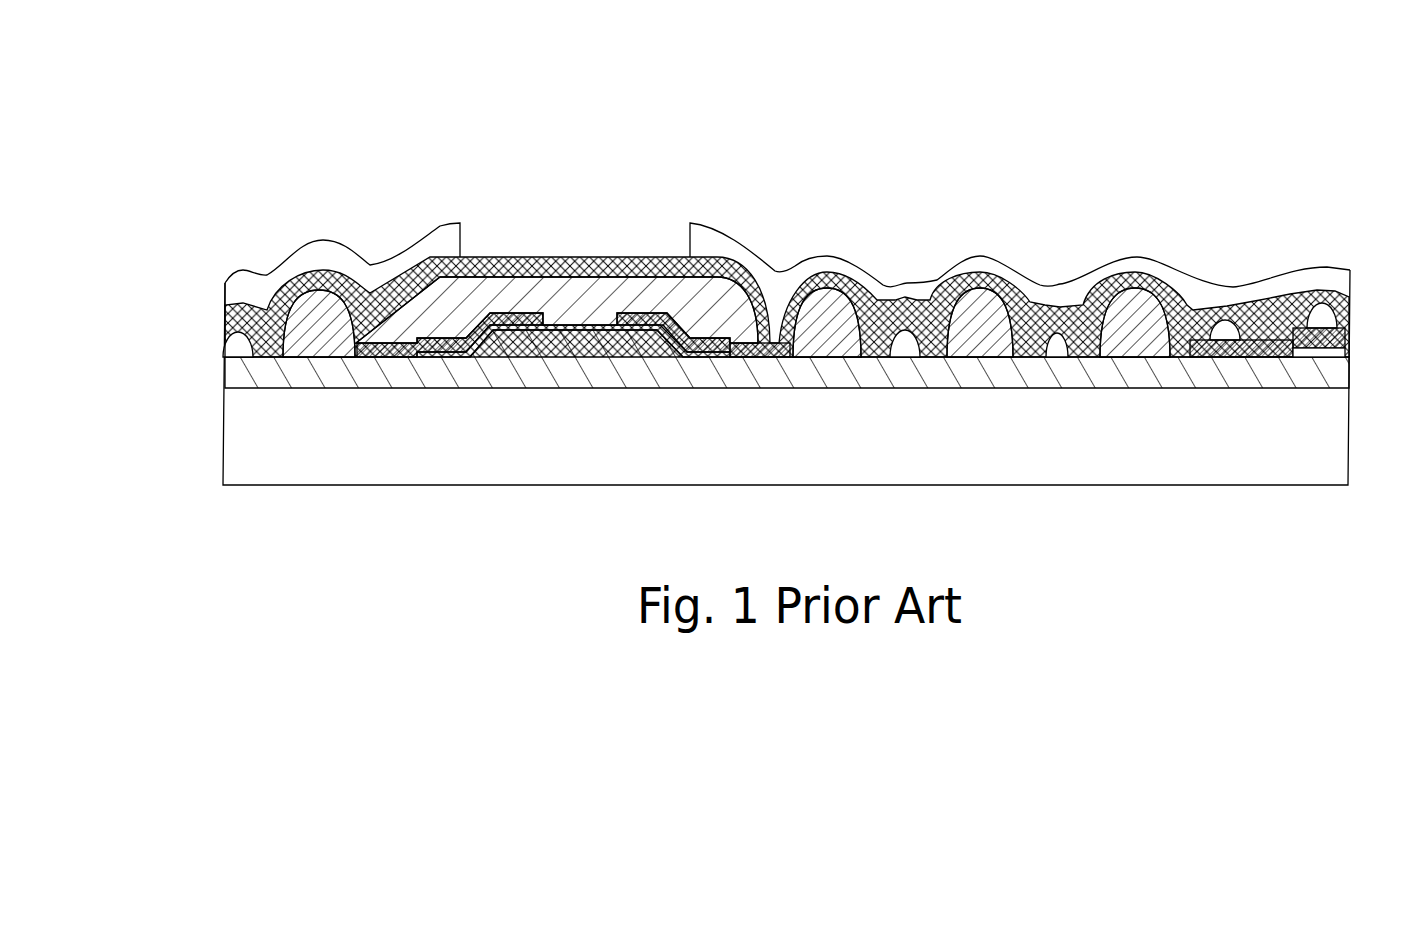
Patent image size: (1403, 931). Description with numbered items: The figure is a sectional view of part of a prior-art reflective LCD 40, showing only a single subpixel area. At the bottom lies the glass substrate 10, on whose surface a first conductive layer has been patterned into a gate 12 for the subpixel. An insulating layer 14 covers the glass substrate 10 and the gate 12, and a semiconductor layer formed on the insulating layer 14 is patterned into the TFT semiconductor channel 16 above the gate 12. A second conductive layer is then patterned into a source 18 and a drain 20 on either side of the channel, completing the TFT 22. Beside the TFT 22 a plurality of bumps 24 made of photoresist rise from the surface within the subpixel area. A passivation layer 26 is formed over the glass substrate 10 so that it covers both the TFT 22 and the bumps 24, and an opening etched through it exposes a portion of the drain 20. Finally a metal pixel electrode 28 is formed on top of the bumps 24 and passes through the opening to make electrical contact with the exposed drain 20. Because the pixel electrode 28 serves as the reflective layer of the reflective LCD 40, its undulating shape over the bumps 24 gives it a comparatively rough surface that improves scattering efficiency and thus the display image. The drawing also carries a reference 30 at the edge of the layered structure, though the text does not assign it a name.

The glass substrate 10 is at (1345, 432).
The gate 12 is at (577, 372).
The insulating layer 14 is at (633, 349).
The TFT semiconductor channel 16 is at (485, 346).
The source 18 is at (387, 358).
The drain 20 is at (753, 358).
The TFT 22 is at (597, 228).
The bump 24 is at (907, 348).
The passivation layer 26 is at (1350, 305).
The pixel electrode 28 is at (222, 332).
The edge of passivation layer 30 is at (235, 290).
The reflective LCD 40 is at (1083, 143).